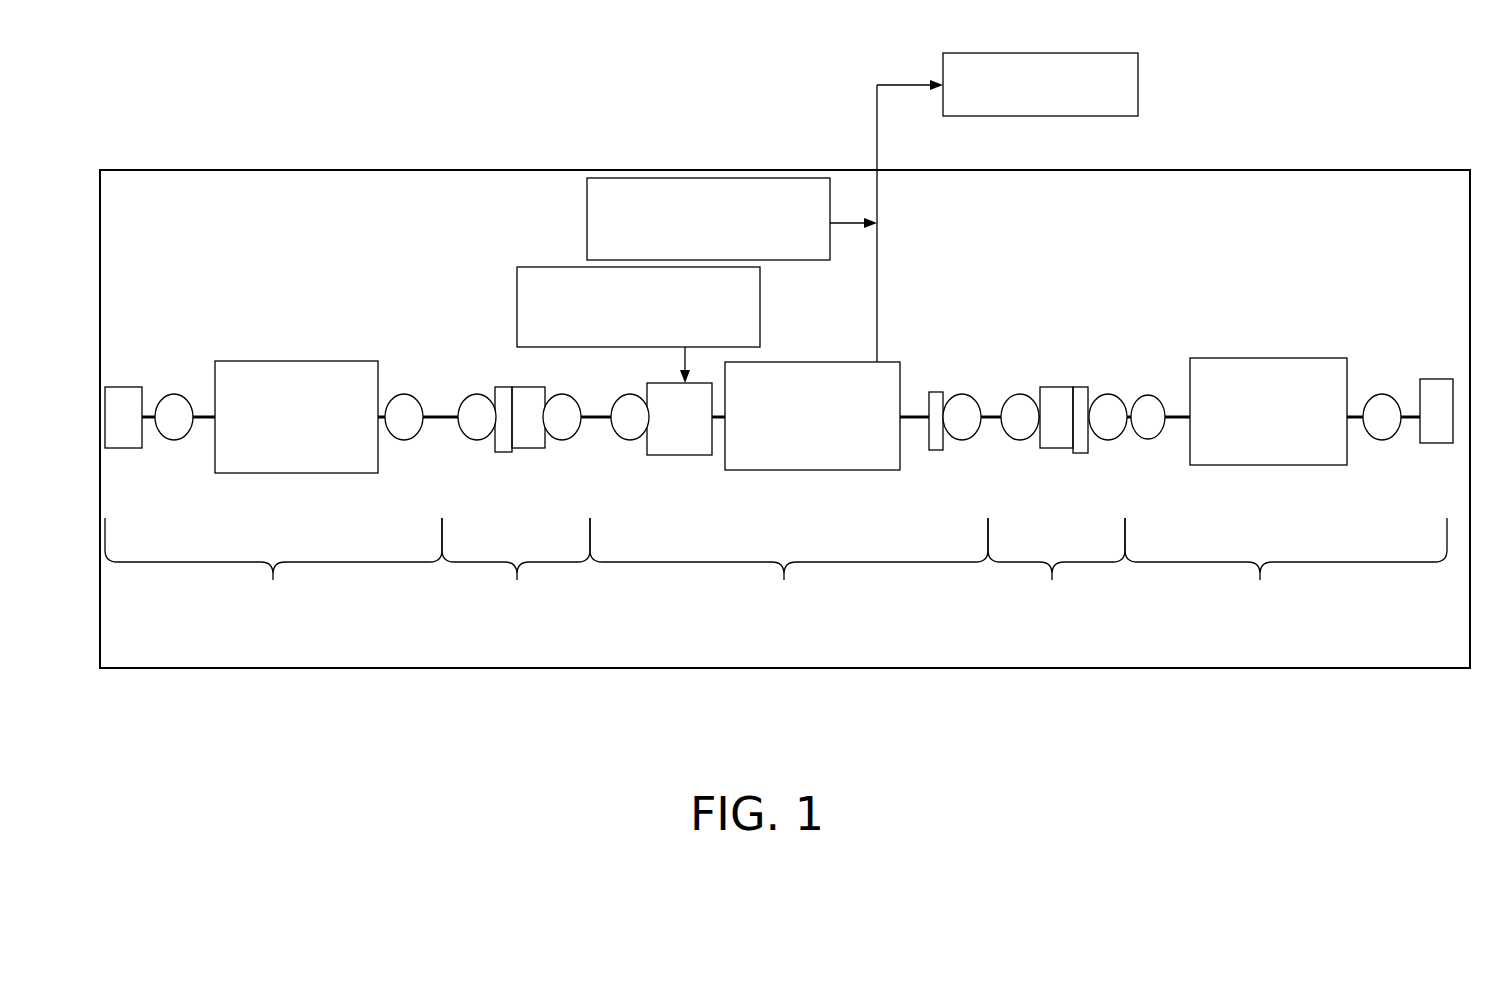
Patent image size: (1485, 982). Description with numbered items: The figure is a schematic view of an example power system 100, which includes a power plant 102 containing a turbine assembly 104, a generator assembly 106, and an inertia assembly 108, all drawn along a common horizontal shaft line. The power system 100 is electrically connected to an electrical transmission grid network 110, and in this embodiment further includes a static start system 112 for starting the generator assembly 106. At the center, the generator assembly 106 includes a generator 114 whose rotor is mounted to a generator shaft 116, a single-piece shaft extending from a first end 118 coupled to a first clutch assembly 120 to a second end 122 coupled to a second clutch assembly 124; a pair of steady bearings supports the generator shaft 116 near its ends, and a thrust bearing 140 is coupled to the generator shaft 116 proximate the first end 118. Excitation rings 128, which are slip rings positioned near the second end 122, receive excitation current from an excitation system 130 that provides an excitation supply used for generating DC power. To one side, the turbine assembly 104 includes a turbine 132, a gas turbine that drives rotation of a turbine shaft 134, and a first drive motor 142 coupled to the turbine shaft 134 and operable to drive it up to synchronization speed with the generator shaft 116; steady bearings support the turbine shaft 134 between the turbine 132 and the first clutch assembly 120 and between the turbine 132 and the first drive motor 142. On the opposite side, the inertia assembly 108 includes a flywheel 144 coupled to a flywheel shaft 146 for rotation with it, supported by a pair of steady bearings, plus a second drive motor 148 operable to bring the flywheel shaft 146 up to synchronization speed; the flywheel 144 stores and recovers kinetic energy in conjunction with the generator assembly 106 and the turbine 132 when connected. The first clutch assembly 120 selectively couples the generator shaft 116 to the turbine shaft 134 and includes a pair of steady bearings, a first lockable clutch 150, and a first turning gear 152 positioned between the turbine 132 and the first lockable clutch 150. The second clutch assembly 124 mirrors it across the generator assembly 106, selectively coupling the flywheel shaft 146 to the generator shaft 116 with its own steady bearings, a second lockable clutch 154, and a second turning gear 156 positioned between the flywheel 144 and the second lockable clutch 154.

The power system 100 is at (1315, 111).
The power plant 102 is at (535, 670).
The turbine assembly 104 is at (1286, 564).
The generator assembly 106 is at (789, 564).
The inertia assembly 108 is at (273, 564).
The electrical transmission grid network 110 is at (1062, 99).
The static start system 112 is at (687, 247).
The generator 114 is at (807, 450).
The generator shaft 116 is at (912, 410).
The first end 118 is at (992, 410).
The first clutch assembly 120 is at (1056, 564).
The second end 122 is at (581, 417).
The second clutch assembly 124 is at (516, 564).
The excitation rings 128 is at (659, 450).
The excitation system 130 is at (617, 335).
The turbine 132 is at (1254, 450).
The turbine shaft 134 is at (1357, 415).
The thrust bearing 140 is at (930, 452).
The first drive motor 142 is at (1438, 378).
The flywheel 144 is at (275, 450).
The flywheel shaft 146 is at (440, 414).
The second drive motor 148 is at (128, 386).
The first lockable clutch 150 is at (1052, 387).
The first turning gear 152 is at (1079, 385).
The second lockable clutch 154 is at (527, 387).
The second turning gear 156 is at (505, 387).